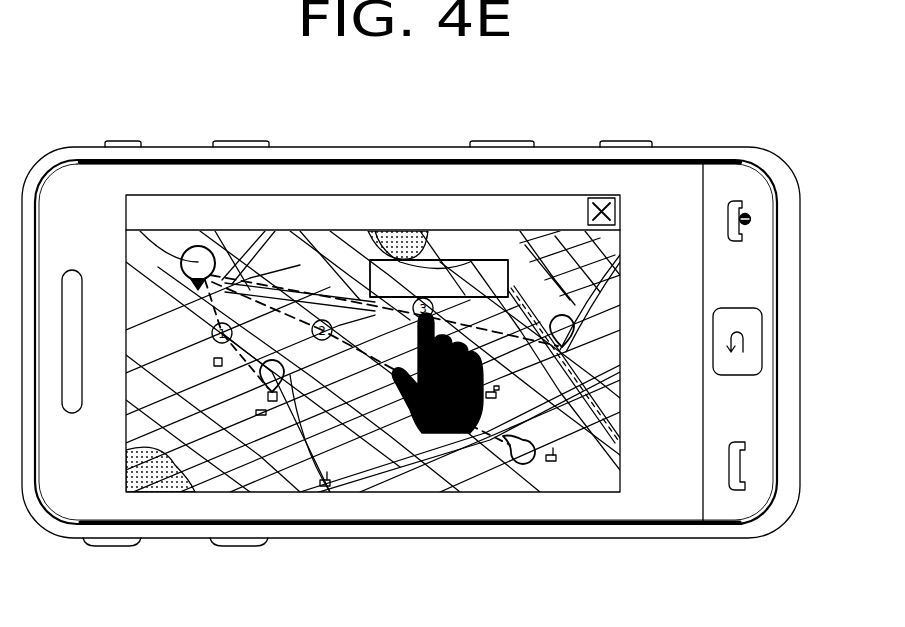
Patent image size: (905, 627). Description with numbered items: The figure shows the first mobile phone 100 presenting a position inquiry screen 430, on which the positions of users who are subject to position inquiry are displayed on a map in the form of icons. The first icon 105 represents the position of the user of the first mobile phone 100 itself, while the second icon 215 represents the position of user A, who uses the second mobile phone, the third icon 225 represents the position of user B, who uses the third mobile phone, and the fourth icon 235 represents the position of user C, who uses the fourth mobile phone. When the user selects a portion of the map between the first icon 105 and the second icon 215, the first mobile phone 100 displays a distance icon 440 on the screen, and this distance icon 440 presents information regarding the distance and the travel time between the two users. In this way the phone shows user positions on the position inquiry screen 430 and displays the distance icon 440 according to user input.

The first mobile phone 100 is at (535, 147).
The first icon 105 is at (198, 246).
The position inquiry screen 430 is at (306, 200).
The distance icon 440 is at (463, 258).
The second icon 215 is at (575, 318).
The third icon 225 is at (511, 460).
The fourth icon 235 is at (264, 392).